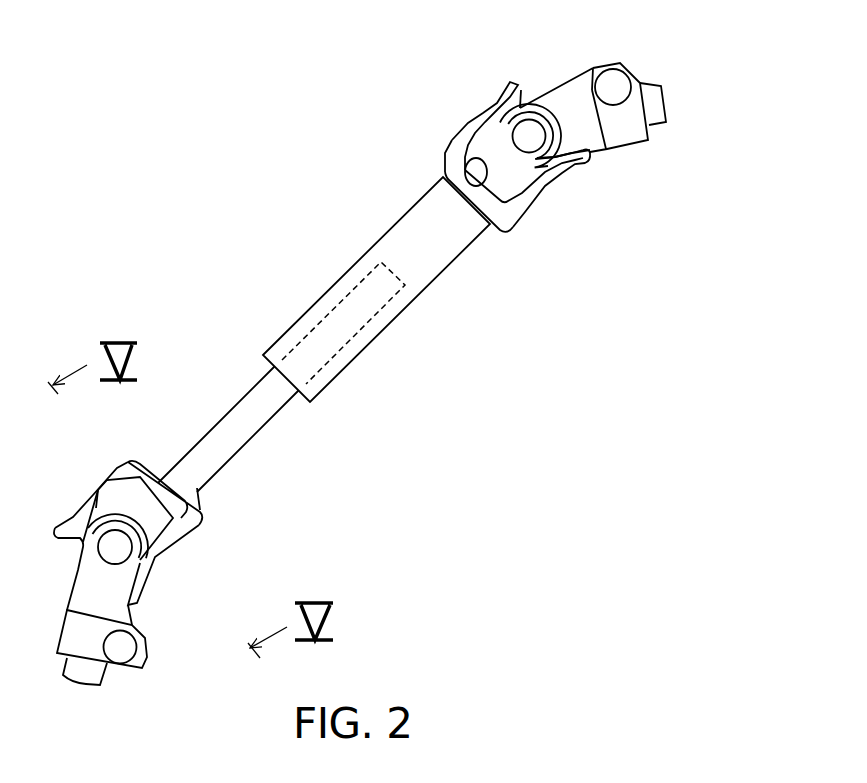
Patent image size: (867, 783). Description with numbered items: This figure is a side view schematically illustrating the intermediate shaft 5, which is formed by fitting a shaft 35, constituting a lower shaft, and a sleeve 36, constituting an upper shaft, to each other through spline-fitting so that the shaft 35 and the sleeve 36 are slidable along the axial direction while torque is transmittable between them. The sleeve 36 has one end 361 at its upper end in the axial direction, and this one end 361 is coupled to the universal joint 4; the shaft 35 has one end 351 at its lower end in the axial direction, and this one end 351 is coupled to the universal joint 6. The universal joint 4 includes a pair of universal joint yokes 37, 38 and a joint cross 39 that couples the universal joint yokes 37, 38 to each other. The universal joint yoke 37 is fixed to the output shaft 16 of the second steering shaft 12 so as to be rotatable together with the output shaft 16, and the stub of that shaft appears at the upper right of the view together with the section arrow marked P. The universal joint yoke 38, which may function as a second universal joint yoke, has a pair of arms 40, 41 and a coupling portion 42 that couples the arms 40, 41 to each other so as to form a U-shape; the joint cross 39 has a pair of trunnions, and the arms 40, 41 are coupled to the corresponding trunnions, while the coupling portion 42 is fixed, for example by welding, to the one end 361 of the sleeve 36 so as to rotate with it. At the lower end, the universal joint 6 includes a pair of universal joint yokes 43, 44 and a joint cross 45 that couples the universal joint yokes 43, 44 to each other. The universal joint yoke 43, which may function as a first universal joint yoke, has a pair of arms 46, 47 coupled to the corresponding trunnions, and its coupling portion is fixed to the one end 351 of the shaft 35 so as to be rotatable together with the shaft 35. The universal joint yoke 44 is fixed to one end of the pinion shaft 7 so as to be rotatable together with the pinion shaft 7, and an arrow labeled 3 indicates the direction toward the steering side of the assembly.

The steering shaft (upper) yoke 3 is at (676, 100).
The universal joint 4 is at (573, 188).
The intermediate shaft 5 is at (326, 275).
The universal joint 6 is at (162, 615).
The pinion shaft 7 is at (103, 683).
The second steering shaft 12 is at (664, 128).
The output shaft 16 is at (641, 83).
The shaft 35 is at (252, 439).
The sleeve 36 is at (401, 313).
The universal joint yoke 37 is at (560, 112).
The universal joint yoke 38 is at (491, 108).
The joint cross 39 is at (529, 135).
The arm 40 is at (466, 137).
The arm 41 is at (536, 199).
The coupling portion 42 is at (470, 159).
The universal joint yoke 43 is at (75, 514).
The universal joint yoke 44 is at (105, 573).
The joint cross 45 is at (118, 549).
The arm 46 is at (107, 488).
The arm 47 is at (174, 558).
The one end 351 is at (209, 488).
The one end 361 is at (487, 228).
The press-fit portion P is at (149, 460).